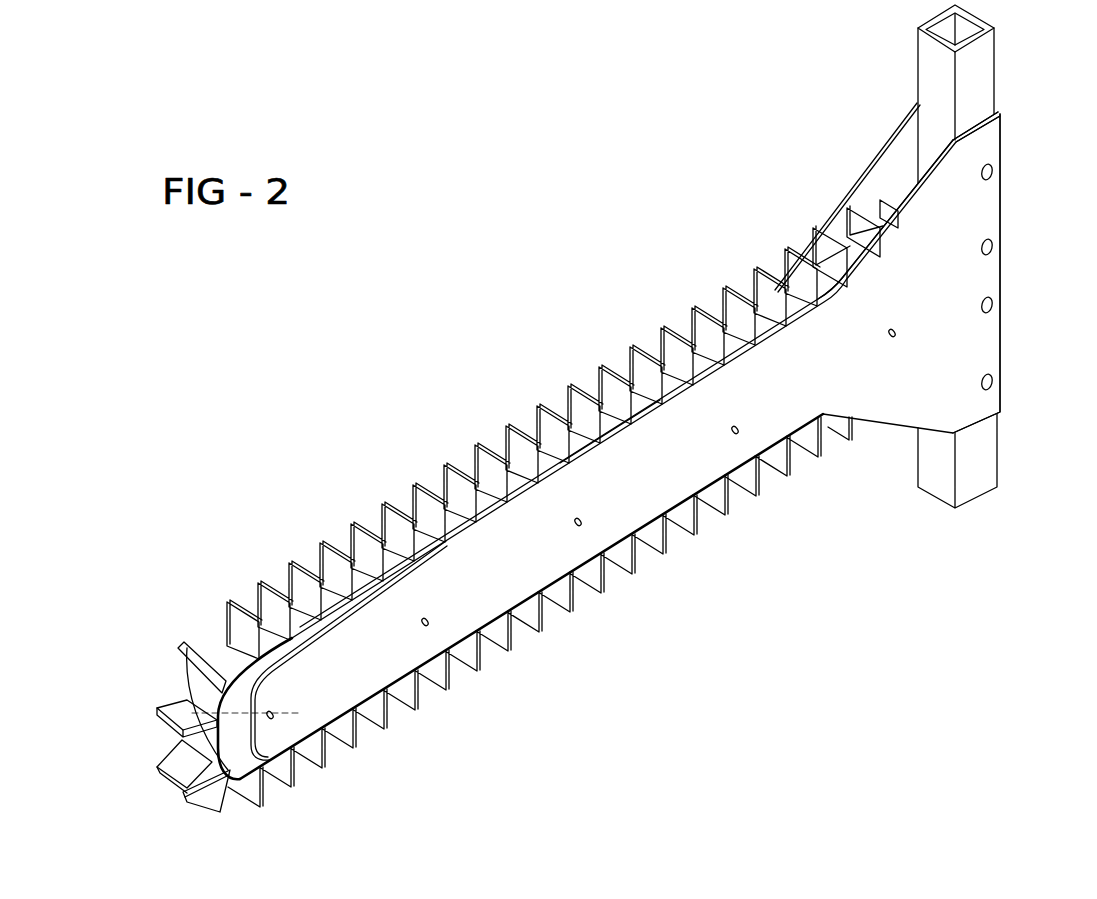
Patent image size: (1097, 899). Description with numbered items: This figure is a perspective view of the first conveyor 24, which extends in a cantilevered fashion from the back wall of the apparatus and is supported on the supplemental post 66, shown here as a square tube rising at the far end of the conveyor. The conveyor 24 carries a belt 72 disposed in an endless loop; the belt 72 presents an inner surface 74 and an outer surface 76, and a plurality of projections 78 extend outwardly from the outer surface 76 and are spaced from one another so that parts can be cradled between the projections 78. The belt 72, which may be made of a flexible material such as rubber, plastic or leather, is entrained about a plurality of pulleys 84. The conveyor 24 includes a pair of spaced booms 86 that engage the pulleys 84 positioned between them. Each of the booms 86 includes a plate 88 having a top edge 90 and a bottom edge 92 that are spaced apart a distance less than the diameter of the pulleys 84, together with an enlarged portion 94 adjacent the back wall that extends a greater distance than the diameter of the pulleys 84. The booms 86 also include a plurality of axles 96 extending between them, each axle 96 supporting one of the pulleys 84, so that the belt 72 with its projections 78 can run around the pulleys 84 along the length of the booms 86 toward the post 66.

The first conveyor 24 is at (377, 668).
The supplemental post 66 is at (985, 67).
The belt 72 is at (548, 447).
The inner surface 74 is at (612, 442).
The outer surface 76 is at (203, 690).
The projections 78 is at (732, 298).
The pulleys 84 is at (728, 372).
The booms 86 is at (888, 168).
The plate 88 is at (712, 470).
The top edge 90 is at (316, 628).
The bottom edge 92 is at (358, 680).
The enlarged portion 94 is at (952, 215).
The axles 96 is at (893, 334).